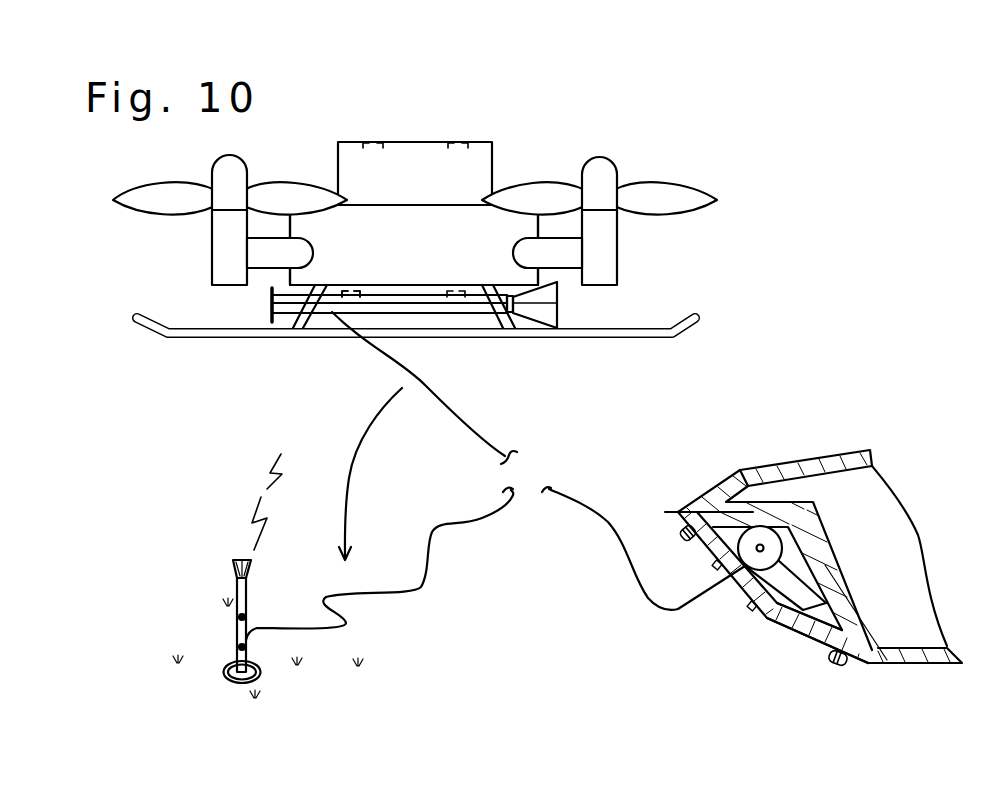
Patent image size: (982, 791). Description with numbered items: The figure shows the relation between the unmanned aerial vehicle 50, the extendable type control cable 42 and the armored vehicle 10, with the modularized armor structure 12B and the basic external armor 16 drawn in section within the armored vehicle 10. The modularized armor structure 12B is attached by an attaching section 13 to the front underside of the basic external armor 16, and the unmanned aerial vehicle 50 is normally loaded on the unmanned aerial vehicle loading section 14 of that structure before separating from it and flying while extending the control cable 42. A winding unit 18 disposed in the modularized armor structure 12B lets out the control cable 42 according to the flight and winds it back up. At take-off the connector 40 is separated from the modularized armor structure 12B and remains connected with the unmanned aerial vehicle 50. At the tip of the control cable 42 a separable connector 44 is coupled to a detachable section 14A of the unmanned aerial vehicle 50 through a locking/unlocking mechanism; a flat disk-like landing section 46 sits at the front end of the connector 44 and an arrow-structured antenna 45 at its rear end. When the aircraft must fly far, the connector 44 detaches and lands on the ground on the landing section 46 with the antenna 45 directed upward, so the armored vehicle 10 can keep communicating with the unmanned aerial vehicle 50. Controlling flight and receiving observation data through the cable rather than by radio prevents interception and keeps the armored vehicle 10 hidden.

The armored vehicle 10 is at (893, 533).
The modularized armor structure 12B is at (817, 644).
The attaching section 13 is at (770, 588).
The unmanned aerial vehicle loading section 14 is at (768, 570).
The detachable section 14A is at (391, 264).
The basic external armor 16 is at (806, 440).
The winding unit 18 is at (777, 519).
The connector 40 is at (344, 470).
The extendable type control cable 42 is at (643, 525).
The separable connector 44 is at (375, 481).
The antenna 45 is at (408, 431).
The landing section 46 is at (252, 491).
The unmanned aerial vehicle 50 is at (415, 219).